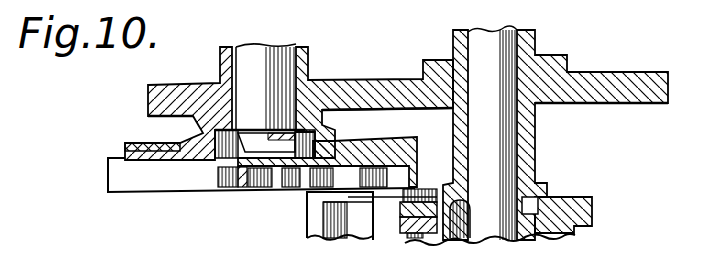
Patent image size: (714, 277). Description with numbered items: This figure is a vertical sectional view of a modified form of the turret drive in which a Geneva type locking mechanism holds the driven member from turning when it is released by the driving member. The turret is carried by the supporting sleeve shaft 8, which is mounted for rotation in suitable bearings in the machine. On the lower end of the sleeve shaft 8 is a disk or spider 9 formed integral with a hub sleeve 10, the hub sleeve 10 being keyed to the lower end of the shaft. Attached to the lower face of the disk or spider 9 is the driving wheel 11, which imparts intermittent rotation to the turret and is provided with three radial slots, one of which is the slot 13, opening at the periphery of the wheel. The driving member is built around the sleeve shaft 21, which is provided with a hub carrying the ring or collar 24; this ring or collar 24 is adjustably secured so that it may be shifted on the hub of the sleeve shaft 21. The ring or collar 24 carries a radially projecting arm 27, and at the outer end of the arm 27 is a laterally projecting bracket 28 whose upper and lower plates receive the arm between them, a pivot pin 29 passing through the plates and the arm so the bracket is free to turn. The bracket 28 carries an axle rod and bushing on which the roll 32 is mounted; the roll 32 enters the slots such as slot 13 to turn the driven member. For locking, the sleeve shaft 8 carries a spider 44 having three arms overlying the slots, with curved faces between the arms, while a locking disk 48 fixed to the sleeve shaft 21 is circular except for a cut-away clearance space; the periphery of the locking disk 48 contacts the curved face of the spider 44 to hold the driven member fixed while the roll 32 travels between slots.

The supporting sleeve shaft 8 is at (308, 49).
The disk or spider 9 is at (185, 143).
The hub sleeve 10 is at (260, 88).
The driving wheel 11 is at (413, 148).
The radial slot 13 is at (118, 173).
The sleeve shaft 21 is at (528, 142).
The ring or collar 24 is at (594, 220).
The radially projecting arm 27 is at (383, 228).
The bracket 28 is at (355, 200).
The pivot pin 29 is at (448, 270).
The roll 32 is at (312, 172).
The spider 44 is at (148, 97).
The locking disk 48 is at (620, 60).